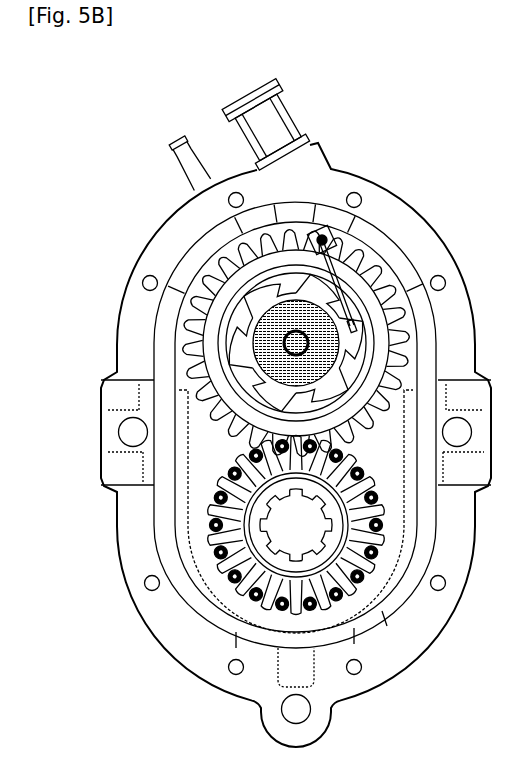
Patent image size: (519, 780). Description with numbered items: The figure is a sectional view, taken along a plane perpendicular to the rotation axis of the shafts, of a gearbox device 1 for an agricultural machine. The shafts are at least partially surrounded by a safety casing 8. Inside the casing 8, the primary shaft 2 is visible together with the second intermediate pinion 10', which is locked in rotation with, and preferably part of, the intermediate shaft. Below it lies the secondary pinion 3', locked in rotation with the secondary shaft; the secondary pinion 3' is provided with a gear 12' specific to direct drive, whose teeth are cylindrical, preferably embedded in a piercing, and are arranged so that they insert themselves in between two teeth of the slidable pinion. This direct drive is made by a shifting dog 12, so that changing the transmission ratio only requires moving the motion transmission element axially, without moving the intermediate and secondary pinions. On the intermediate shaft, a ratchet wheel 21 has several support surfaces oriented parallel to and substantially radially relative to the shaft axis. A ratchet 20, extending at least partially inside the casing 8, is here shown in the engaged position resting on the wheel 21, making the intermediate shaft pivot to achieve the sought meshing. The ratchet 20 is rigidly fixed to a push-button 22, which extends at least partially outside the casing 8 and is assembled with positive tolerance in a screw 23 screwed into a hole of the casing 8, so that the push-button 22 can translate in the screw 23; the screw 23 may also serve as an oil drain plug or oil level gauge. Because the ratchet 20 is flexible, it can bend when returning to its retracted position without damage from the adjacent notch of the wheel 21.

The gearbox device 1 is at (460, 102).
The primary shaft 2 is at (306, 533).
The secondary pinion 3' is at (245, 532).
The safety casing 8 is at (180, 232).
The second intermediate pinion 10' is at (244, 343).
The shifting dog 12 is at (223, 580).
The gear specific to direct drive 12' is at (259, 551).
The ratchet 20 is at (384, 264).
The wheel 21 is at (355, 334).
The push-button 22 is at (237, 110).
The screw 23 is at (248, 137).